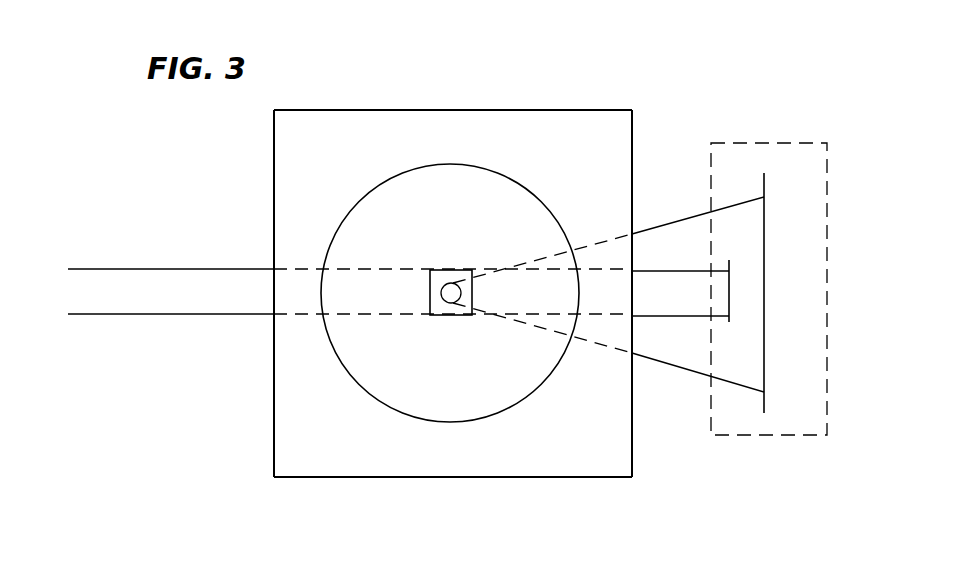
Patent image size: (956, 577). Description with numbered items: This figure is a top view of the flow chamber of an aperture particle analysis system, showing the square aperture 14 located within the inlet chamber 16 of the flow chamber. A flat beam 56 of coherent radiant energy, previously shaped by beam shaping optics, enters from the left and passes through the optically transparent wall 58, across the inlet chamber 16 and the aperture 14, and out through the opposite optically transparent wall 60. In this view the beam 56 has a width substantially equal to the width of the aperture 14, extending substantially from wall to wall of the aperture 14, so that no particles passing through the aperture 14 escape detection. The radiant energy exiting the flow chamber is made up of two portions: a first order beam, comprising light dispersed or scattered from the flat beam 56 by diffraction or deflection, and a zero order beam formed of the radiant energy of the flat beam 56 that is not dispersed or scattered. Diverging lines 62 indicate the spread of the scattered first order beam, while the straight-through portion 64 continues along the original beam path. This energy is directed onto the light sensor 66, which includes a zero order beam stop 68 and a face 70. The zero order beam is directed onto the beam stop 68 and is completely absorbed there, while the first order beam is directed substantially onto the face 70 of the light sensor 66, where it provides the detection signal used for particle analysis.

The aperture 14 is at (441, 275).
The inlet chamber 16 is at (410, 185).
The flat beam 56 is at (205, 314).
The optically transparent wall 58 is at (274, 233).
The optically transparent wall 60 is at (632, 190).
The diverging beam boundary 62 is at (668, 224).
The collimated beam 64 is at (652, 316).
The light sensor 66 is at (790, 143).
The zero order beam stop 68 is at (729, 322).
The face 70 is at (765, 400).